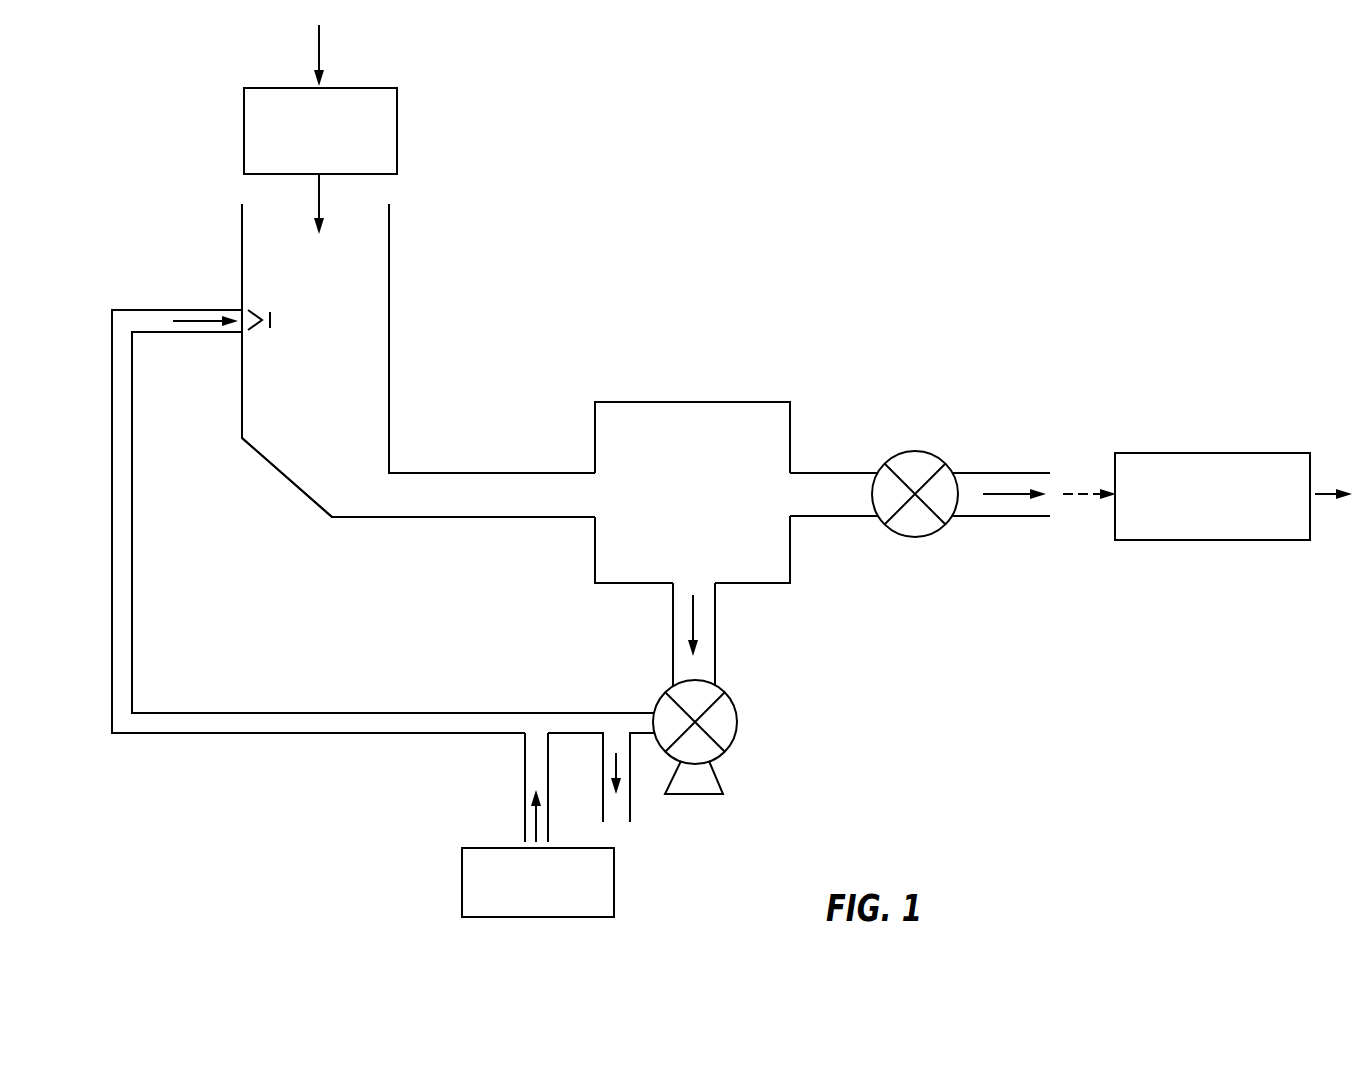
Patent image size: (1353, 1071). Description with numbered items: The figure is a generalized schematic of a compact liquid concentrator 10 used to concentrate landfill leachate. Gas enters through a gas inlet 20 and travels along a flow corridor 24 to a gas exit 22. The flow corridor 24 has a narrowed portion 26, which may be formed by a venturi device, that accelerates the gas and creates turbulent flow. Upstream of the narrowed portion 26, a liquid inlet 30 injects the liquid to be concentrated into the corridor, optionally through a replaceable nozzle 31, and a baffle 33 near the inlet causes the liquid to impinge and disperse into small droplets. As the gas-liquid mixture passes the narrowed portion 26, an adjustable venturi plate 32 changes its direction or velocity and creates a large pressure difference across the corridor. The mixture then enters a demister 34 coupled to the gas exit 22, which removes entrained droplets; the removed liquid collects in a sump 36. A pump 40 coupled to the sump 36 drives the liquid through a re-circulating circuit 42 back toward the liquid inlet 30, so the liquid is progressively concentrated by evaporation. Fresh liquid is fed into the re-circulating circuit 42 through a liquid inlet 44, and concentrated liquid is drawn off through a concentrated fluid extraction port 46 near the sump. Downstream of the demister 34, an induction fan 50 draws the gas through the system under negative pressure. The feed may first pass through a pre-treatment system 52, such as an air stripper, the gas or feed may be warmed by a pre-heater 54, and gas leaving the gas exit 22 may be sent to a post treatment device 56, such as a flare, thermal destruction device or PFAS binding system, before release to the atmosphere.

The liquid concentrator 10 is at (680, 226).
The gas inlet 20 is at (389, 209).
The gas exit 22 is at (1048, 470).
The flow corridor 24 is at (500, 508).
The narrowed portion 26 is at (373, 445).
The liquid inlet 30 is at (241, 306).
The nozzle 31 is at (258, 315).
The baffle 33 is at (271, 328).
The venturi plate 32 is at (296, 490).
The demister 34 is at (690, 402).
The sump 36 is at (710, 605).
The pump 40 is at (738, 720).
The re-circulating circuit 42 is at (243, 686).
The liquid inlet 44 is at (544, 755).
The concentrated fluid extraction port 46 is at (617, 813).
The induction fan 50 is at (915, 452).
The pre-treatment system 52 is at (614, 883).
The pre-heater 54 is at (397, 133).
The post treatment device 56 is at (1196, 453).